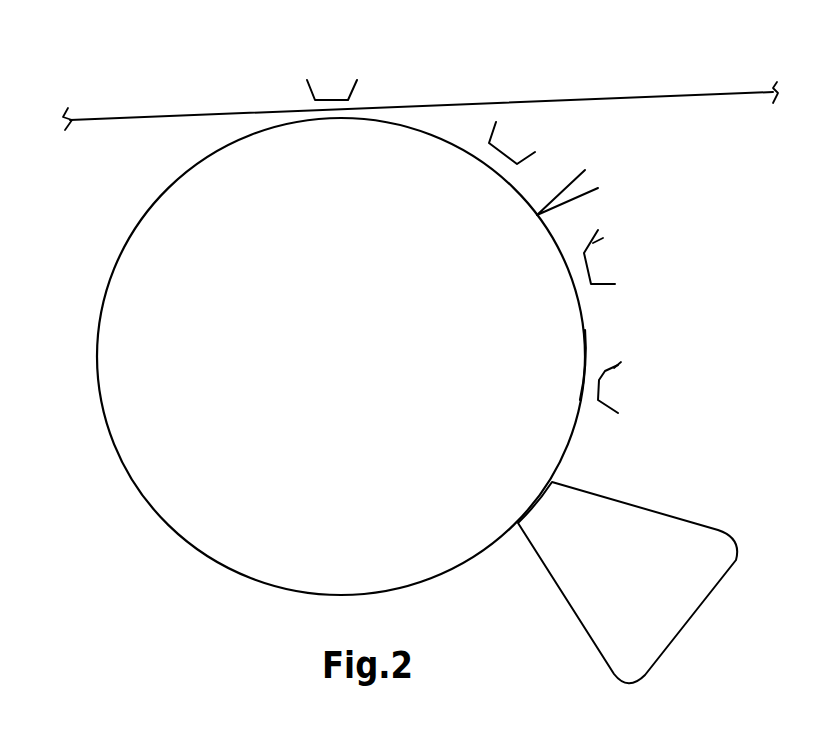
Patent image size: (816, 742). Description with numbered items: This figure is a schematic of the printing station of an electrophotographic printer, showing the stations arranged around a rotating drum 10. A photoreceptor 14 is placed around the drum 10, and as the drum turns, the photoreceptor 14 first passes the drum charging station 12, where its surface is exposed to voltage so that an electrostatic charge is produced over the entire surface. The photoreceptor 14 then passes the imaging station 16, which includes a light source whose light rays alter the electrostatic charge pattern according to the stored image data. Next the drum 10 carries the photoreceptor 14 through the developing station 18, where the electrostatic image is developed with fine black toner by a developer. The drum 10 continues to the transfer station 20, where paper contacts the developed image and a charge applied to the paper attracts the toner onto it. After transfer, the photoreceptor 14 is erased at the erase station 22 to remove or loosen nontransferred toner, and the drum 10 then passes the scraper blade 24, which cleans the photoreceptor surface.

The rotating drum 10 is at (110, 283).
The drum charging station 12 is at (598, 232).
The photoreceptor 14 is at (582, 318).
The imaging station 16 is at (618, 364).
The developing station 18 is at (633, 503).
The transfer station 20 is at (306, 93).
The erase station 22 is at (522, 163).
The scraper blade 24 is at (573, 195).